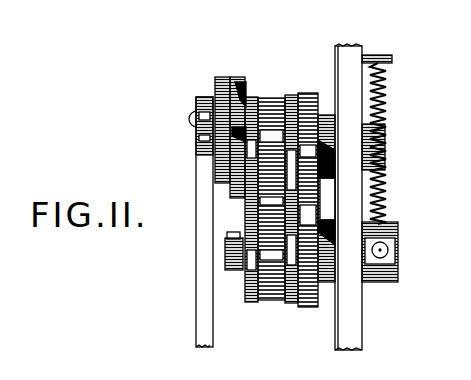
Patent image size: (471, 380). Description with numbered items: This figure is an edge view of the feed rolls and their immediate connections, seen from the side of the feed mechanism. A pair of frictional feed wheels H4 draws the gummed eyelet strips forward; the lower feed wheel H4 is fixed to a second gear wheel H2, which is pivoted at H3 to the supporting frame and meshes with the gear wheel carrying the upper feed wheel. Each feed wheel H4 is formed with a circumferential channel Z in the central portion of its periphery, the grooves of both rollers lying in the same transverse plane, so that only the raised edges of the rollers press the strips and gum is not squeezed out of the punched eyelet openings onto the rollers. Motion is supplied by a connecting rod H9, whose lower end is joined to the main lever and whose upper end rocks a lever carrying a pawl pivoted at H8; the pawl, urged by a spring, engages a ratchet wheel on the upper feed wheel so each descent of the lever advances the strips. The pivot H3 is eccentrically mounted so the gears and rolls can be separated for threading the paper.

The connecting rod H9 is at (196, 322).
The circumferential channel Z is at (270, 100).
The frictional feed wheel H4 is at (291, 94).
The pawl pivot H8 is at (307, 92).
The second gear wheel H2 is at (308, 306).
The pivot H3 is at (225, 250).